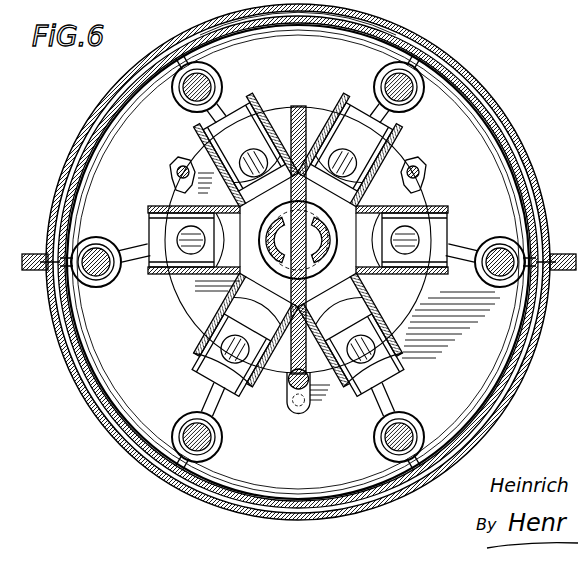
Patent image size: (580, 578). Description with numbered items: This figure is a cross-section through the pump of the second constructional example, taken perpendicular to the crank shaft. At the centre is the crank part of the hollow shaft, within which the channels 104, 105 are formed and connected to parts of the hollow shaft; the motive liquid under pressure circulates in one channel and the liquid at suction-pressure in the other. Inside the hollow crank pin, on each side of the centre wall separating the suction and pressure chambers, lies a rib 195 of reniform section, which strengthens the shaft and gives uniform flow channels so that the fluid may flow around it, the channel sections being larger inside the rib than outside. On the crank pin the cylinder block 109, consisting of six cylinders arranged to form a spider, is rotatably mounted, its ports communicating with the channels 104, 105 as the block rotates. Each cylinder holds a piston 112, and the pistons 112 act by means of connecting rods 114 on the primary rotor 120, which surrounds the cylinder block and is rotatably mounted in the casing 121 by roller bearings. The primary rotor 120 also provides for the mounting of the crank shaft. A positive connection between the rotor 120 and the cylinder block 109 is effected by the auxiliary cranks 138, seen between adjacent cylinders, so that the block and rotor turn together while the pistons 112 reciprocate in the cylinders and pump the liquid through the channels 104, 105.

The channel 104 is at (314, 218).
The channel 105 is at (228, 157).
The cylinder block 109 is at (388, 154).
The piston 112 is at (222, 372).
The connecting rod 114 is at (213, 409).
The primary rotor 120 is at (497, 134).
The casing 121 is at (466, 69).
The auxiliary crank 138 is at (424, 174).
The rib 195 is at (213, 321).